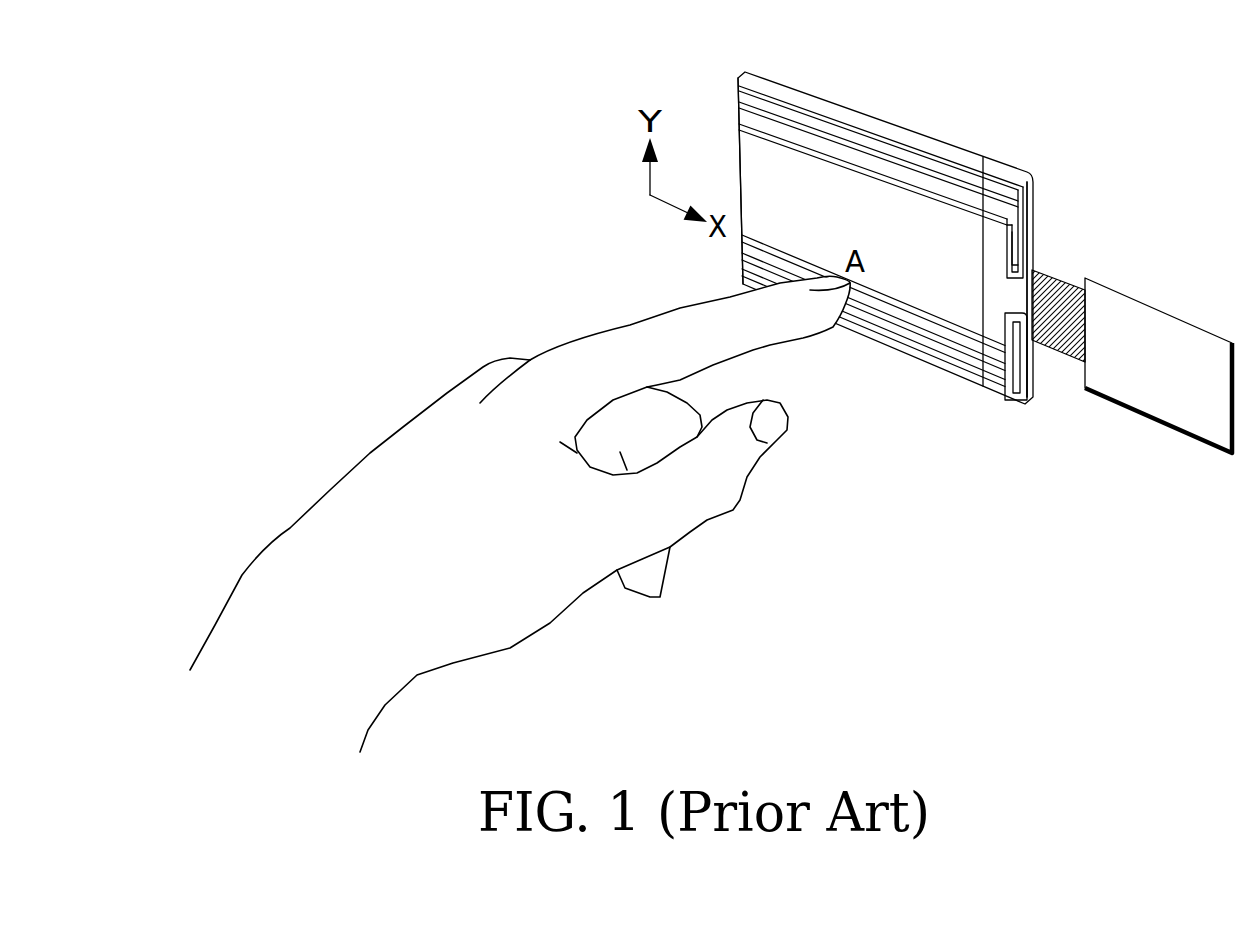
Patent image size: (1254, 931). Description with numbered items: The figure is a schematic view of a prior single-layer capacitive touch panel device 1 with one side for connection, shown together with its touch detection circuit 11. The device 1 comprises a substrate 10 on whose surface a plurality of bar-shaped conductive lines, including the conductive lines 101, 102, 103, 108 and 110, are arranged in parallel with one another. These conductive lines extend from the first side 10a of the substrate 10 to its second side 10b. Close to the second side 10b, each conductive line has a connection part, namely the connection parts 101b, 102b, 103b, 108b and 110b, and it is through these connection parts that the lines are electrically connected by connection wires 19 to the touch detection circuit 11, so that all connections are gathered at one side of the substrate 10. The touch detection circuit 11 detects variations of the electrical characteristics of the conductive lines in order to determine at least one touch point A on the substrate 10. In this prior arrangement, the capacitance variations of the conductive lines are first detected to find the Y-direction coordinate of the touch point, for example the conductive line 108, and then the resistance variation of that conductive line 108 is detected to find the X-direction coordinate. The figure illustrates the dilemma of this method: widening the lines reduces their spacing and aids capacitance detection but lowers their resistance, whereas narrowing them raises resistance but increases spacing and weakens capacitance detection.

The single-layer capacitive touch panel device 1 is at (1068, 153).
The substrate 10 is at (893, 124).
The first side 10a is at (737, 89).
The second side 10b is at (986, 160).
The conductive line 101 is at (948, 182).
The connection part 101b is at (1020, 192).
The conductive line 102 is at (948, 183).
The connection part 102b is at (1015, 221).
The conductive line 103 is at (948, 195).
The connection part 103b is at (1013, 250).
The conductive line 108 is at (942, 342).
The connection part 108b is at (998, 378).
The conductive line 110 is at (942, 379).
The connection part 110b is at (985, 380).
The connection wire 19 is at (1048, 348).
The touch detection circuit 11 is at (1158, 365).